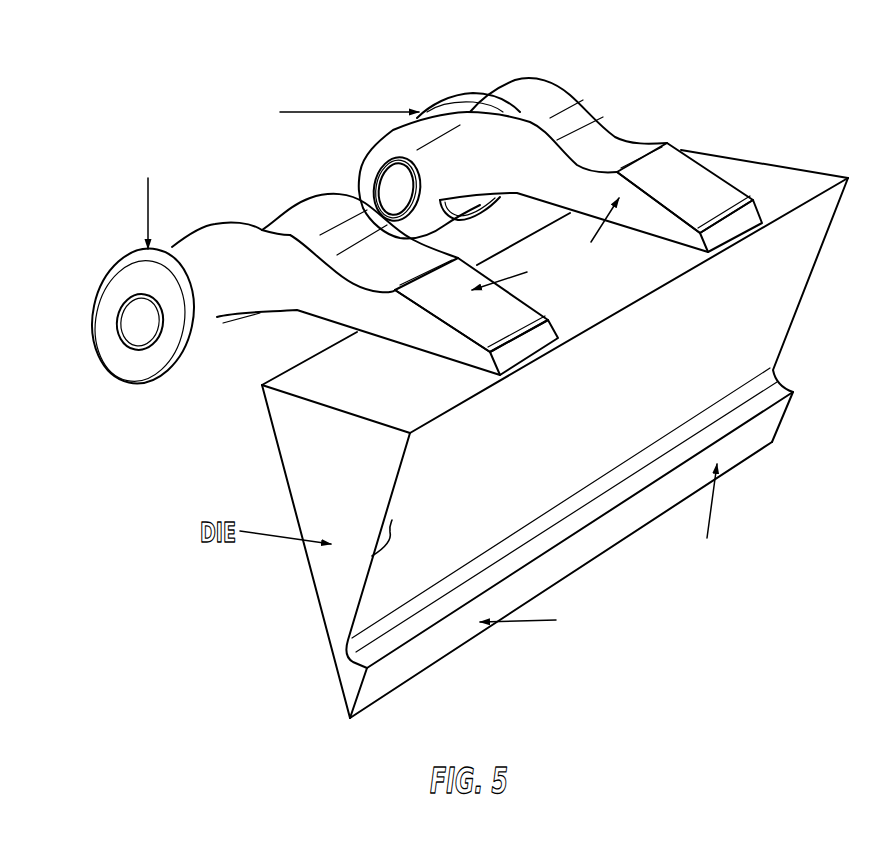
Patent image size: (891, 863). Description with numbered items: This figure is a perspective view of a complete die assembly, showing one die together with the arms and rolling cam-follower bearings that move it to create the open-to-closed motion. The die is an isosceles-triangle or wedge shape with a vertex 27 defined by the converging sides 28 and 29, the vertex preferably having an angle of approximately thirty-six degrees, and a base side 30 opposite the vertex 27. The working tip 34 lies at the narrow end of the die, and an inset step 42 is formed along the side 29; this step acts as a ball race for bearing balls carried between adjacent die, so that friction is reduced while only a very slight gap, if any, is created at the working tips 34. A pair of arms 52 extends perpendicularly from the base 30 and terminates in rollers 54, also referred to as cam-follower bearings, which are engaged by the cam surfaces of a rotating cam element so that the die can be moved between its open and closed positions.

The vertex 27 is at (350, 717).
The side 28 is at (283, 478).
The side 29 is at (750, 313).
The base side 30 is at (317, 368).
The working tip 34 is at (423, 659).
The inset step 42 is at (372, 556).
The arm 52 is at (553, 102).
The roller 54 is at (100, 279).